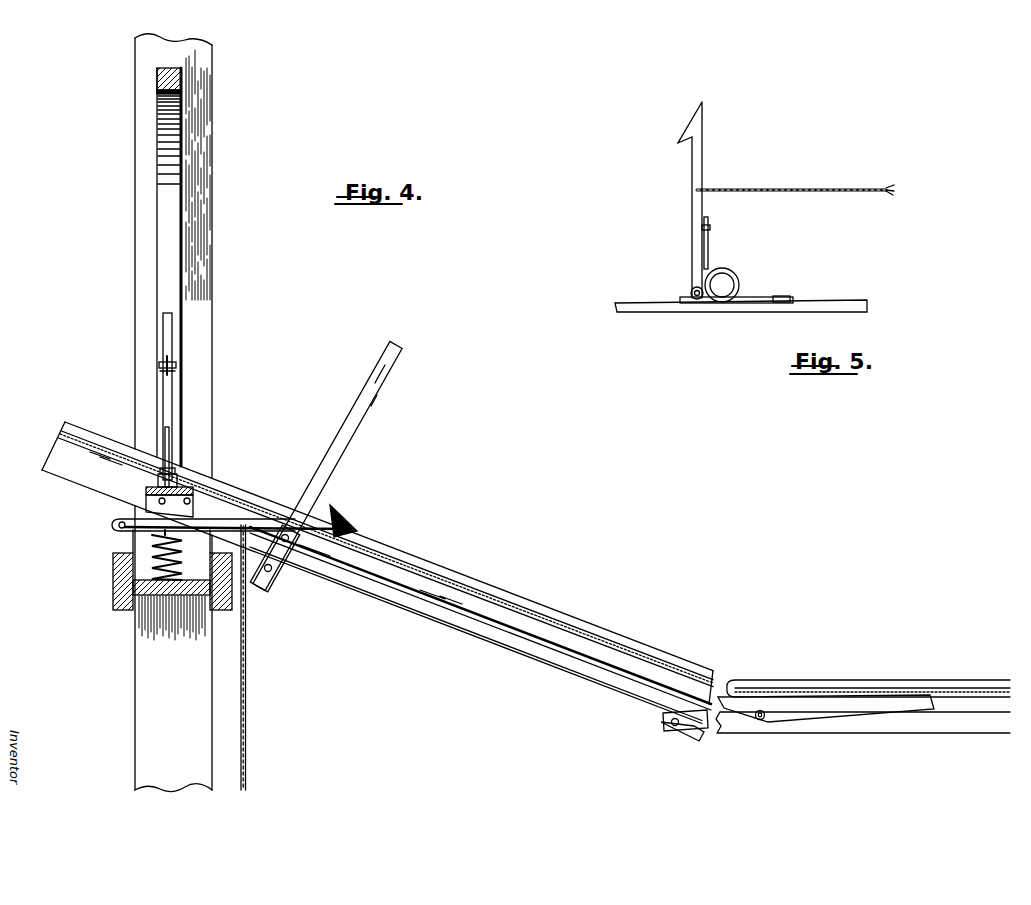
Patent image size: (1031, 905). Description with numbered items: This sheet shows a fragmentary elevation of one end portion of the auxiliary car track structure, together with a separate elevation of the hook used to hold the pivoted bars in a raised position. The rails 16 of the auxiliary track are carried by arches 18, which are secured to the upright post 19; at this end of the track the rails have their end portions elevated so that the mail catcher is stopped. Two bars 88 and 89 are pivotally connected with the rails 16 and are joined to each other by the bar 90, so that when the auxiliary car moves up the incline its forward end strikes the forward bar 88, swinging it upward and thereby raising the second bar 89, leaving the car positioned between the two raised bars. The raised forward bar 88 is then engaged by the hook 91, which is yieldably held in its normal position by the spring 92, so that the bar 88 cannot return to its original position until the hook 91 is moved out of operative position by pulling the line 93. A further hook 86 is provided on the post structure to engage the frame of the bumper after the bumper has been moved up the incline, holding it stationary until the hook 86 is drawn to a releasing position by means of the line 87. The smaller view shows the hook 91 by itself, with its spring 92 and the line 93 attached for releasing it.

In FIG. 4, the rails 16 is at (818, 690).
In FIG. 4, the arches 18 is at (180, 148).
In FIG. 4, the post 19 is at (147, 252).
In FIG. 4, the hook 86 is at (214, 527).
In FIG. 4, the line 87 is at (248, 651).
In FIG. 4, the forward bar 88 is at (383, 373).
In FIG. 4, the second bar 89 is at (920, 693).
In FIG. 4, the bar 90 is at (460, 606).
In FIG. 4, the hook 91 is at (172, 393).
In FIG. 5, the hook 91 is at (698, 167).
In FIG. 4, the spring 92 is at (170, 450).
In FIG. 5, the spring 92 is at (736, 278).
In FIG. 4, the line 93 is at (160, 368).
In FIG. 5, the line 93 is at (798, 186).